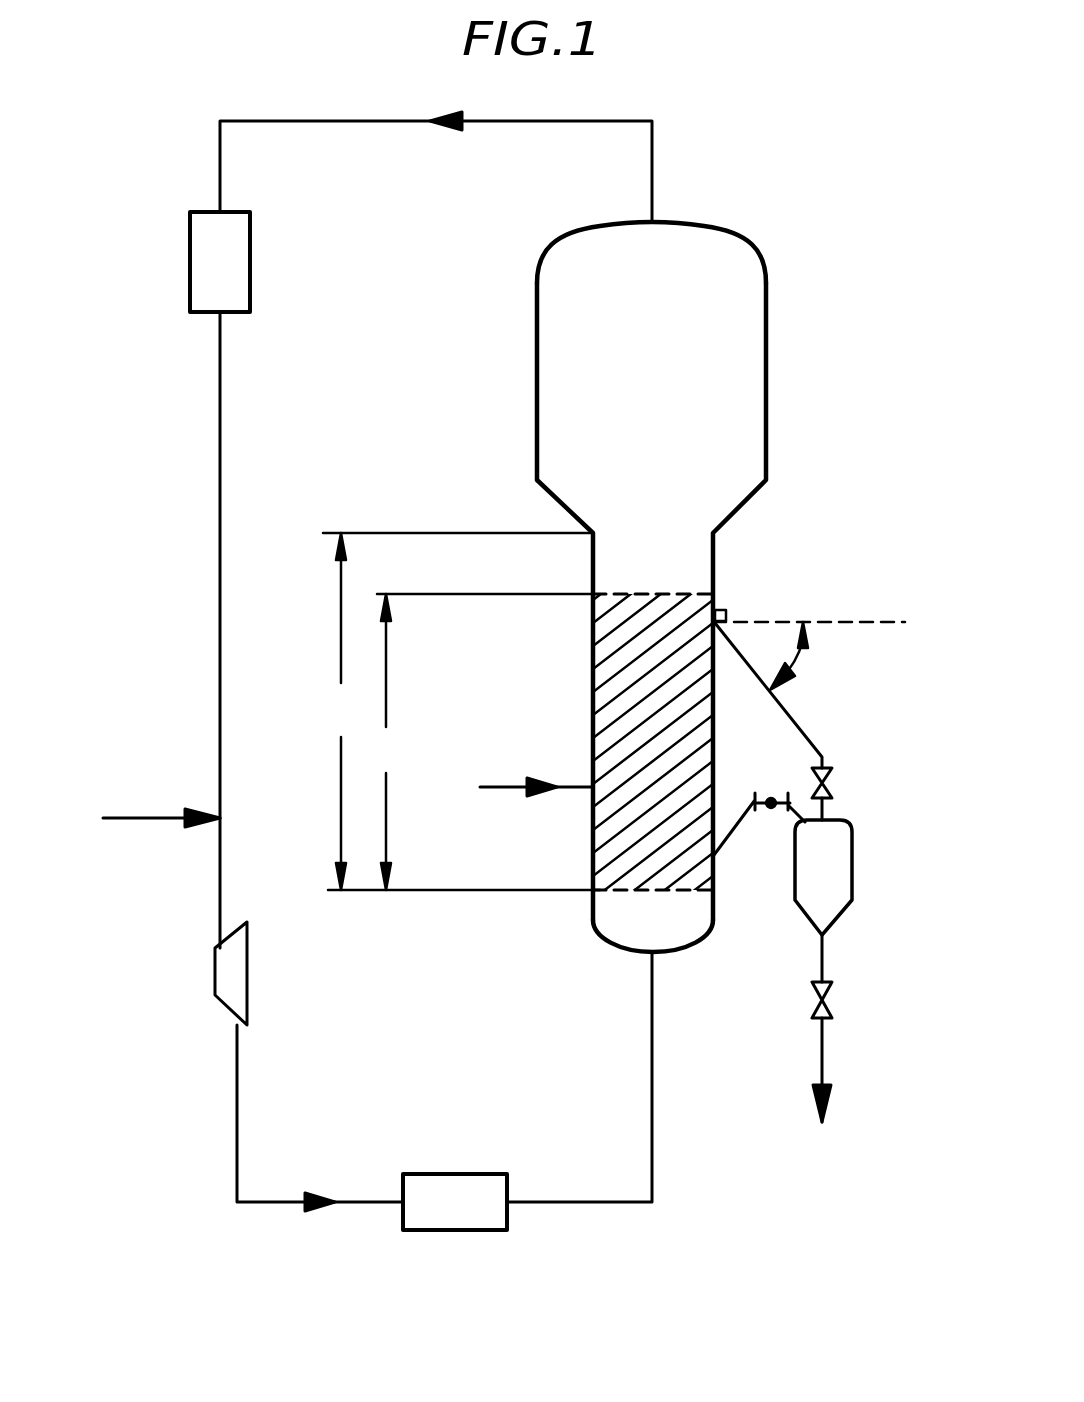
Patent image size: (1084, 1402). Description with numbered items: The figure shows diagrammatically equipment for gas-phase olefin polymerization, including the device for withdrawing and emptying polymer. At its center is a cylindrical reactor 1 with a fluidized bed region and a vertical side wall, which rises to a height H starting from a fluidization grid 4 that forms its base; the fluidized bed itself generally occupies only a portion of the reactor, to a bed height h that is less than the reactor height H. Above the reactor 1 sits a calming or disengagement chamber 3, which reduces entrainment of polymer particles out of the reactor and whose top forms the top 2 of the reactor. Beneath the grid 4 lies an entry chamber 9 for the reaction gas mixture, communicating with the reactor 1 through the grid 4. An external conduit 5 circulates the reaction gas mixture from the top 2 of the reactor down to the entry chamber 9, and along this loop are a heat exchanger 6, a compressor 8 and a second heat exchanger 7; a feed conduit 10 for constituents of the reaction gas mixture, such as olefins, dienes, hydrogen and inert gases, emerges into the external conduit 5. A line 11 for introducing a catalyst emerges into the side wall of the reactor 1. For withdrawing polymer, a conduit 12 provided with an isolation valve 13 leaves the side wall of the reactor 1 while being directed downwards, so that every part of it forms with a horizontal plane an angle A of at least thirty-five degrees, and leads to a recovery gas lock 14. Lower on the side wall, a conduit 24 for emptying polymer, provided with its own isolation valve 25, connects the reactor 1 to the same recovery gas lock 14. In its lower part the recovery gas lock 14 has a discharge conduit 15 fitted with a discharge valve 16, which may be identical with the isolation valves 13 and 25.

The cylindrical reactor 1 is at (593, 675).
The top of the reactor 2 is at (735, 240).
The disengagement chamber 3 is at (766, 412).
The fluidization grid 4 is at (625, 885).
The external conduit 5 is at (317, 121).
The heat exchanger 6 is at (190, 258).
The heat exchanger 7 is at (463, 1232).
The compressor 8 is at (215, 978).
The entry chamber 9 is at (610, 945).
The feed conduit 10 is at (148, 818).
The line for introducing a catalyst 11 is at (498, 786).
The conduit for withdrawing polymer 12 is at (802, 730).
The isolation valve 13 is at (830, 790).
The recovery gas lock 14 is at (852, 875).
The discharge conduit 15 is at (822, 1063).
The discharge valve 16 is at (830, 1010).
The conduit for emptying polymer 24 is at (733, 822).
The isolation valve 25 is at (788, 808).
The angle A is at (795, 665).
The height of the reactor H is at (461, 711).
The height of the fluidized bed h is at (485, 742).